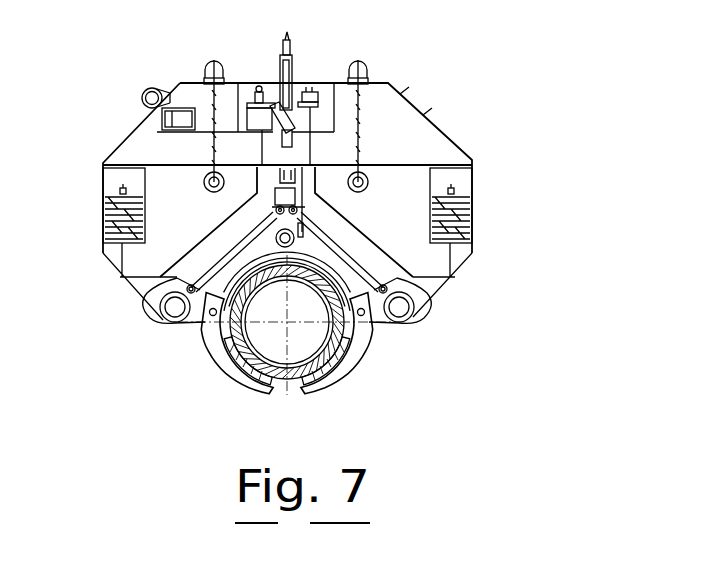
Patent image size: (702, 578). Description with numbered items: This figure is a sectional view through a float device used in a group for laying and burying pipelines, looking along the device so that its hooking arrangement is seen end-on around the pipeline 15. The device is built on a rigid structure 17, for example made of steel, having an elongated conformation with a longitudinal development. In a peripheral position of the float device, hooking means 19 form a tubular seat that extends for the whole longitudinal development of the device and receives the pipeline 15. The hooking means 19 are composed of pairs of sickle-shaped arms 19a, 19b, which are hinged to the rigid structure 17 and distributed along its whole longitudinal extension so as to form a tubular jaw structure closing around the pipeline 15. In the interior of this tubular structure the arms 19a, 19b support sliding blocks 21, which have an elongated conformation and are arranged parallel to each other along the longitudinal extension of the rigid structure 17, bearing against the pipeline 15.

The pipeline 15 is at (287, 378).
The rigid structure 17 is at (152, 300).
The hooking means 19 is at (342, 350).
The sickle-shaped arm 19a is at (217, 347).
The sickle-shaped arm 19b is at (365, 333).
The sliding blocks 21 is at (346, 360).